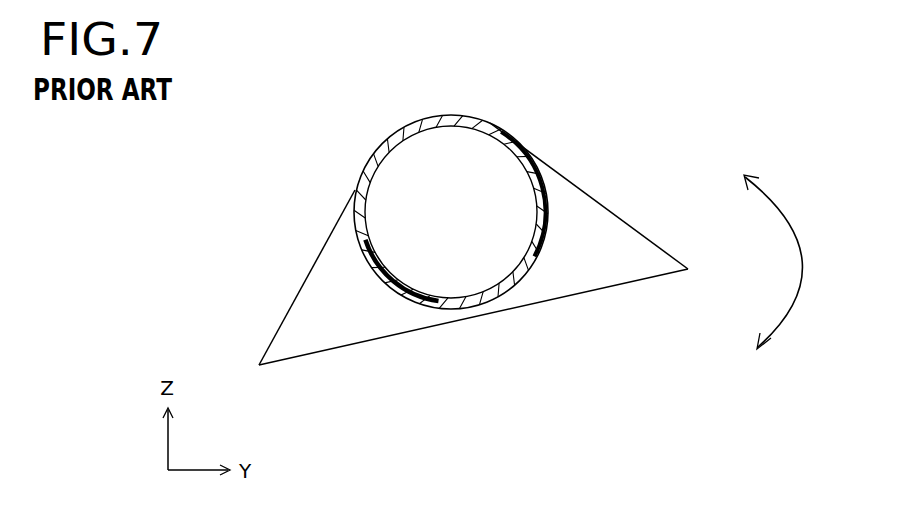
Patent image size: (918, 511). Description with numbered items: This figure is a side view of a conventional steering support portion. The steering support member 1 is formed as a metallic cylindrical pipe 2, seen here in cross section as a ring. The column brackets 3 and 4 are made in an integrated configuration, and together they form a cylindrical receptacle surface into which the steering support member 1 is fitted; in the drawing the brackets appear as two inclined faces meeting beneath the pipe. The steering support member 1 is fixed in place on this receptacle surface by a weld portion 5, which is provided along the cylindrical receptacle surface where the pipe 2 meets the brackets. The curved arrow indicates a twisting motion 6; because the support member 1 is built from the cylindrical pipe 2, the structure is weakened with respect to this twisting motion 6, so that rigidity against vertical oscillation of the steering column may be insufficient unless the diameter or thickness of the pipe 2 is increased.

The steering support member 1 is at (490, 119).
The metallic cylindrical pipe 2 is at (451, 170).
The column bracket 3 is at (303, 300).
The column bracket 4 is at (588, 225).
The weld portion 5 is at (490, 298).
The twisting motion 6 is at (783, 210).